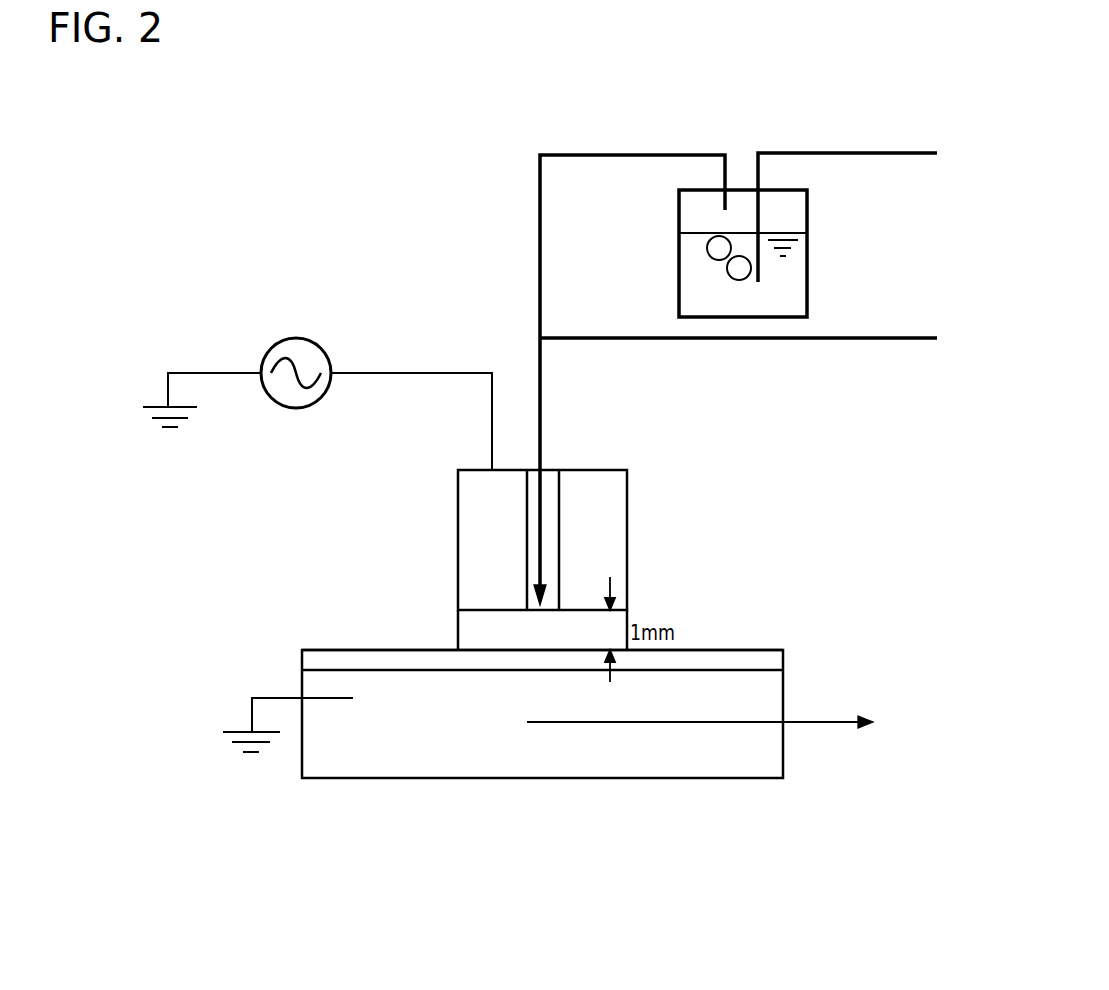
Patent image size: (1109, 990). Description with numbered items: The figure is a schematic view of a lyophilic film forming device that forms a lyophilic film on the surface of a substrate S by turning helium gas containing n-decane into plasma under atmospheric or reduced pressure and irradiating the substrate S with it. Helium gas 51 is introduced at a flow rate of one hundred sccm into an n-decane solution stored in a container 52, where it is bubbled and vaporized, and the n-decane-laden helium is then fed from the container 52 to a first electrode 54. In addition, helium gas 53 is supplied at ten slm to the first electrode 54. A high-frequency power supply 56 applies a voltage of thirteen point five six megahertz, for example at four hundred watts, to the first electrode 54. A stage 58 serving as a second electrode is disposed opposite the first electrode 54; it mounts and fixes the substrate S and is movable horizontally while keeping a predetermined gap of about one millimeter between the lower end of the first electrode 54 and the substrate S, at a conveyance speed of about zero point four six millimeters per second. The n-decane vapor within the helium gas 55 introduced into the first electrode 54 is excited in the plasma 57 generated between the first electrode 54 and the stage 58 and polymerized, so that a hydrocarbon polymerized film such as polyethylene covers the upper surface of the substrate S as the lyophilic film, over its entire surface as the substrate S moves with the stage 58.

The helium gas 51 is at (856, 150).
The container 52 is at (807, 273).
The helium gas 53 is at (810, 340).
The first electrode 54 is at (598, 470).
The helium gas 55 is at (545, 525).
The high-frequency power supply 56 is at (296, 338).
The plasma 57 is at (458, 630).
The stage 58 is at (703, 765).
The substrate S is at (785, 657).